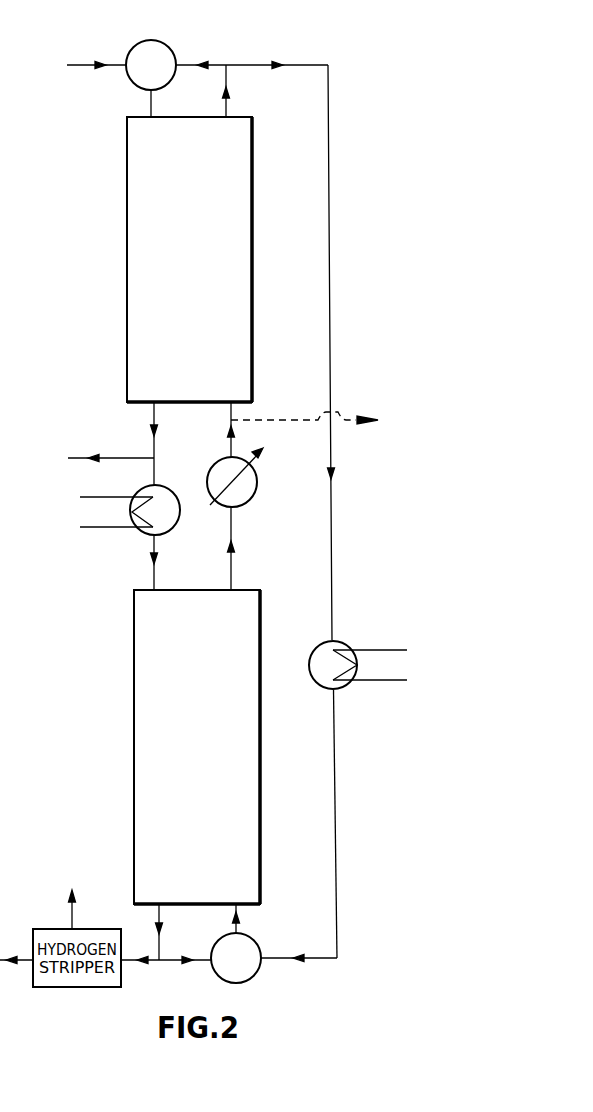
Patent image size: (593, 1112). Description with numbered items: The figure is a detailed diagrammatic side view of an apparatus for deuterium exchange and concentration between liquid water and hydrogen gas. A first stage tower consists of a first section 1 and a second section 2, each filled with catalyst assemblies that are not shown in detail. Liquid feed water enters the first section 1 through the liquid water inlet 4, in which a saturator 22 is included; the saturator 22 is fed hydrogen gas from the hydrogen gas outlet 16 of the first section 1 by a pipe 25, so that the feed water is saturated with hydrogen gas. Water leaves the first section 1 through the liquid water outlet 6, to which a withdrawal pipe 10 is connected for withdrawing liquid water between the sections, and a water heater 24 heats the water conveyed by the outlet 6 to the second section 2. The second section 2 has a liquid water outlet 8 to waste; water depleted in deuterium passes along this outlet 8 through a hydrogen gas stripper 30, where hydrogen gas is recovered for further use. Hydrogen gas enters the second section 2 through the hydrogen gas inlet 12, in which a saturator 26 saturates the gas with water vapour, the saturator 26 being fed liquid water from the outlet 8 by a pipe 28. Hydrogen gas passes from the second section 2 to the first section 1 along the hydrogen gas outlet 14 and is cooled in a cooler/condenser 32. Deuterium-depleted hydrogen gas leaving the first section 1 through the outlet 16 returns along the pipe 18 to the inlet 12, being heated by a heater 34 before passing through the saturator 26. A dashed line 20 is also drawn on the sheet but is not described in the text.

The first section 1 is at (243, 291).
The second section 2 is at (243, 790).
The liquid water inlet 4 is at (148, 105).
The liquid water outlet 6 is at (152, 468).
The liquid water outlet 8 is at (157, 945).
The withdrawal pipe 10 is at (108, 454).
The hydrogen gas inlet 12 is at (243, 923).
The hydrogen gas outlet 14 is at (233, 562).
The hydrogen gas outlet 16 is at (230, 100).
The pipe 18 is at (331, 330).
The optional withdrawal line 20 is at (358, 413).
The saturator 22 is at (168, 20).
The water heater 24 is at (168, 524).
The pipe 25 is at (185, 62).
The saturator 26 is at (248, 968).
The pipe 28 is at (174, 961).
The hydrogen gas stripper 30 is at (56, 928).
The cooler/condenser 32 is at (247, 485).
The heater 34 is at (343, 688).